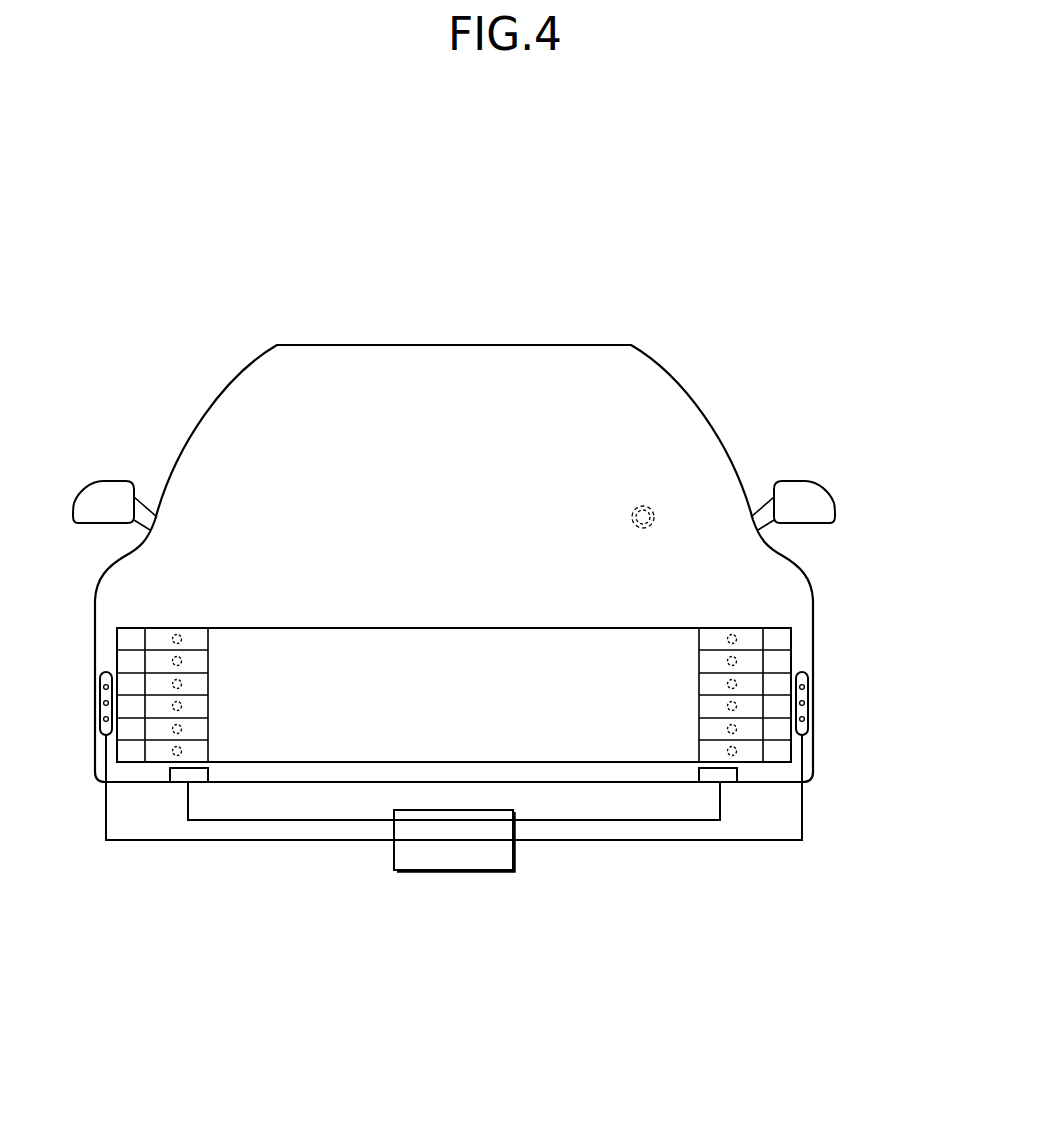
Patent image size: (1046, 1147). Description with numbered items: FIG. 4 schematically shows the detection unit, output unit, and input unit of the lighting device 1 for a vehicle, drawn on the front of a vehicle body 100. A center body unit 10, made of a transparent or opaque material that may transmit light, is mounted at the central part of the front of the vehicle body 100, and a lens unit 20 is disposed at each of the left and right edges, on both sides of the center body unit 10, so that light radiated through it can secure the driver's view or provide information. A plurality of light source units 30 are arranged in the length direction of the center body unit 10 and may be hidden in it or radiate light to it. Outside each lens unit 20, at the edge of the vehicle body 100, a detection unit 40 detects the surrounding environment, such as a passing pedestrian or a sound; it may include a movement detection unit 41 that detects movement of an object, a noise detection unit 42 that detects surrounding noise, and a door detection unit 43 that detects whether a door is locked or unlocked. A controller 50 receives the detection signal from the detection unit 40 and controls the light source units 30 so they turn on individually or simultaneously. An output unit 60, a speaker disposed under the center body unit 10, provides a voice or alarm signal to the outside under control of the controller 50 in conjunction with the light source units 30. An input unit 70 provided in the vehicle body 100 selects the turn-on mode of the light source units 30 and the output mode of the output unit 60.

The lighting device for a vehicle 1 is at (901, 236).
The center body unit 10 is at (300, 733).
The lens unit 20 is at (752, 760).
The light source unit 30 is at (728, 757).
The detection unit 40 is at (875, 673).
The movement detection unit 41 is at (806, 687).
The noise detection unit 42 is at (806, 703).
The door detection unit 43 is at (806, 719).
The controller 50 is at (452, 872).
The output unit 60 is at (180, 785).
The input unit 70 is at (654, 506).
The vehicle body 100 is at (815, 572).